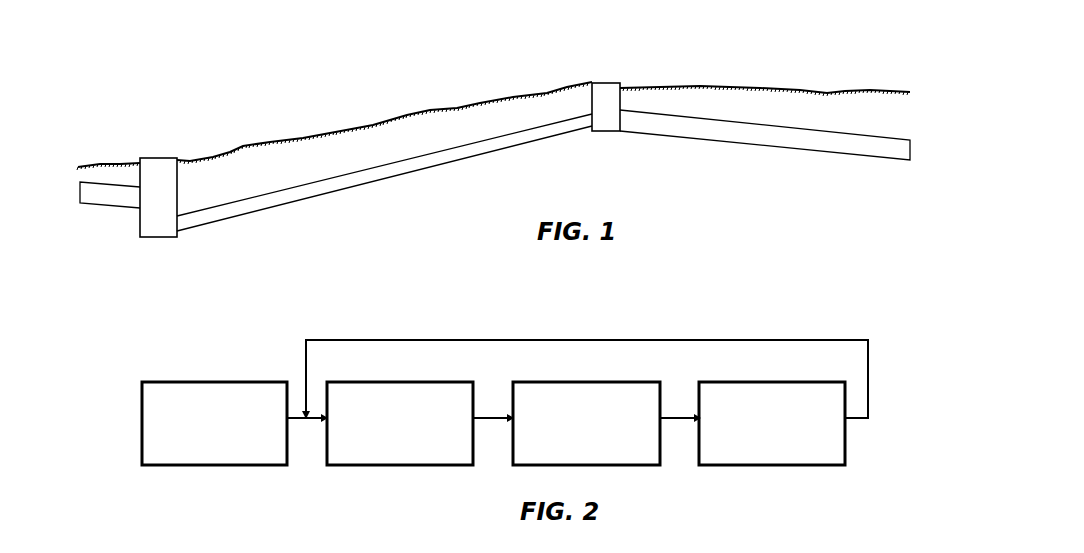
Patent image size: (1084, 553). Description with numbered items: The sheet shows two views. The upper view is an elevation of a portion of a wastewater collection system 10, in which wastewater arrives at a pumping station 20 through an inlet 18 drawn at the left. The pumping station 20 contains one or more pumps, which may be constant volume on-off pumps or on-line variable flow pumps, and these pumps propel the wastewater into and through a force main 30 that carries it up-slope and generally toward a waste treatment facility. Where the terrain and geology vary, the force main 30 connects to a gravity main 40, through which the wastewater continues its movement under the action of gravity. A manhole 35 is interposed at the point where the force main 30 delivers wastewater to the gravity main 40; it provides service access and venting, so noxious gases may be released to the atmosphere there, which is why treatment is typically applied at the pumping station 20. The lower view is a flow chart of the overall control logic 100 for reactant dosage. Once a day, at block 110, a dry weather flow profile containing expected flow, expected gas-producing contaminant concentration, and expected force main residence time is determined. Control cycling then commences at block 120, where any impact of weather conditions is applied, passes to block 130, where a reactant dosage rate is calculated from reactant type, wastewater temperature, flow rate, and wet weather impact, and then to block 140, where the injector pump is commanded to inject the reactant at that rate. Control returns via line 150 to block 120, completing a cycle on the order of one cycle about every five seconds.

In FIG. 1, the wastewater collection system 10 is at (232, 98).
In FIG. 1, the inlet 18 is at (122, 207).
In FIG. 1, the pumping station 20 is at (167, 230).
In FIG. 1, the force main 30 is at (341, 190).
In FIG. 1, the manhole 35 is at (614, 124).
In FIG. 1, the gravity main 40 is at (703, 141).
In FIG. 2, the method 100 is at (243, 331).
In FIG. 2, the DWF profile determination block 110 is at (214, 423).
In FIG. 2, the weather conditions block 120 is at (400, 423).
In FIG. 2, the reactant dosage rate calculation block 130 is at (586, 423).
In FIG. 2, the reactant injection block 140 is at (772, 423).
In FIG. 2, the return line 150 is at (593, 340).